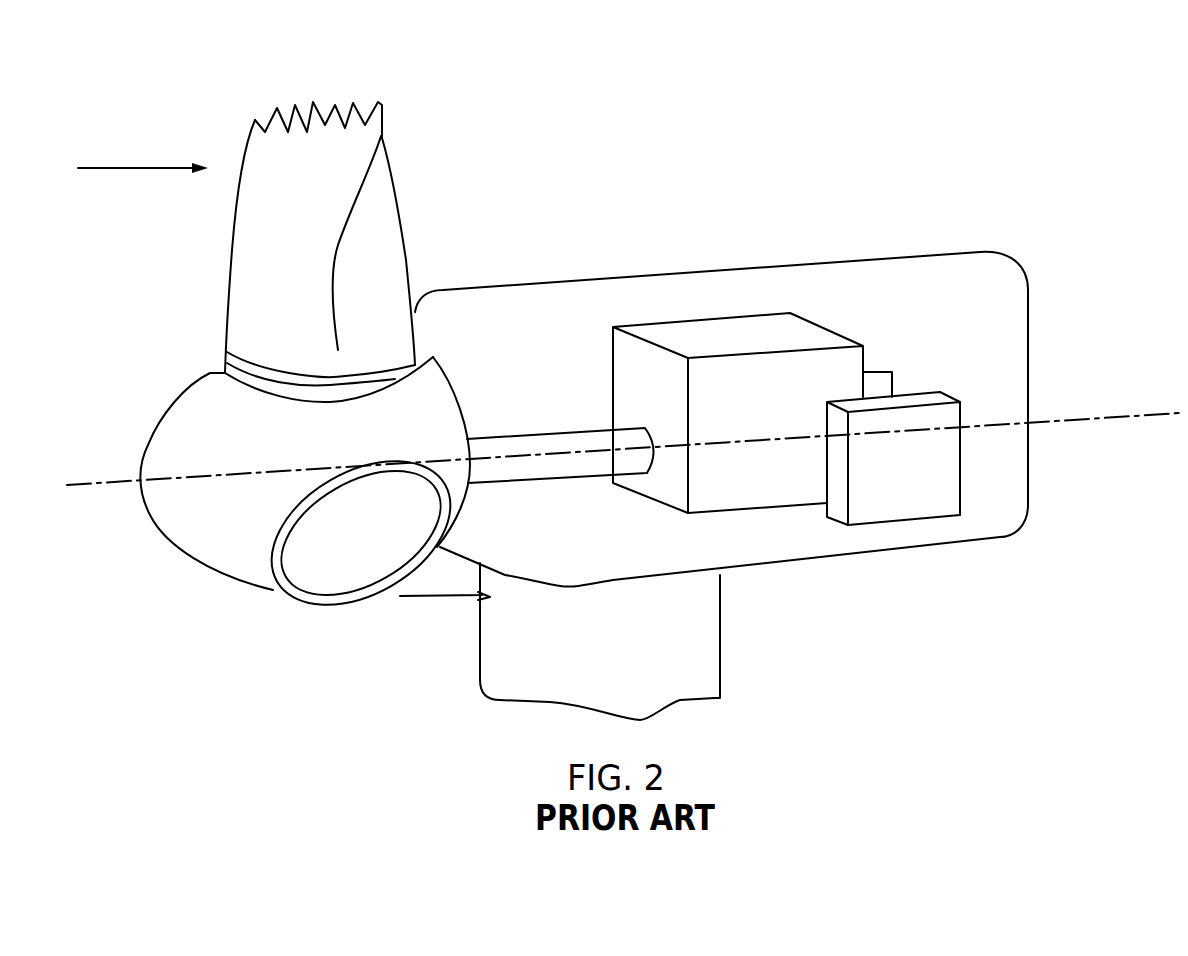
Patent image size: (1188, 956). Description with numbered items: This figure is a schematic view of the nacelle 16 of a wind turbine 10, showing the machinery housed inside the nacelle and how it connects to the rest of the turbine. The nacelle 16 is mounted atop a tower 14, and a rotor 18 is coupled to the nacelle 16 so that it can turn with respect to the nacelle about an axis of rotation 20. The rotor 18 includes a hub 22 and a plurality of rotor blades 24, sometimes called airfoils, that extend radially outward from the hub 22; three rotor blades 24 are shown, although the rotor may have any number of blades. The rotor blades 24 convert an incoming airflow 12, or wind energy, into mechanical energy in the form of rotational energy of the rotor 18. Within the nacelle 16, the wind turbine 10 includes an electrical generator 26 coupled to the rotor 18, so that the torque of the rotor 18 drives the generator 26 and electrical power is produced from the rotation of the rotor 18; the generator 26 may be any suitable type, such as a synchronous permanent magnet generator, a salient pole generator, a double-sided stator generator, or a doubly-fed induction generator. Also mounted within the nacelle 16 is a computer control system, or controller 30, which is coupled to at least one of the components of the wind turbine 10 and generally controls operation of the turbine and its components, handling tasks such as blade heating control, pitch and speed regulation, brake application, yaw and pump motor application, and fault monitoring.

The wind turbine 10 is at (205, 72).
The airflow 12 is at (142, 167).
The tower 14 is at (705, 649).
The nacelle 16 is at (915, 255).
The rotor 18 is at (368, 495).
The axis of rotation 20 is at (80, 487).
The hub 22 is at (162, 433).
The rotor blades 24 is at (252, 238).
The electrical generator 26 is at (798, 504).
The controller 30 is at (918, 392).